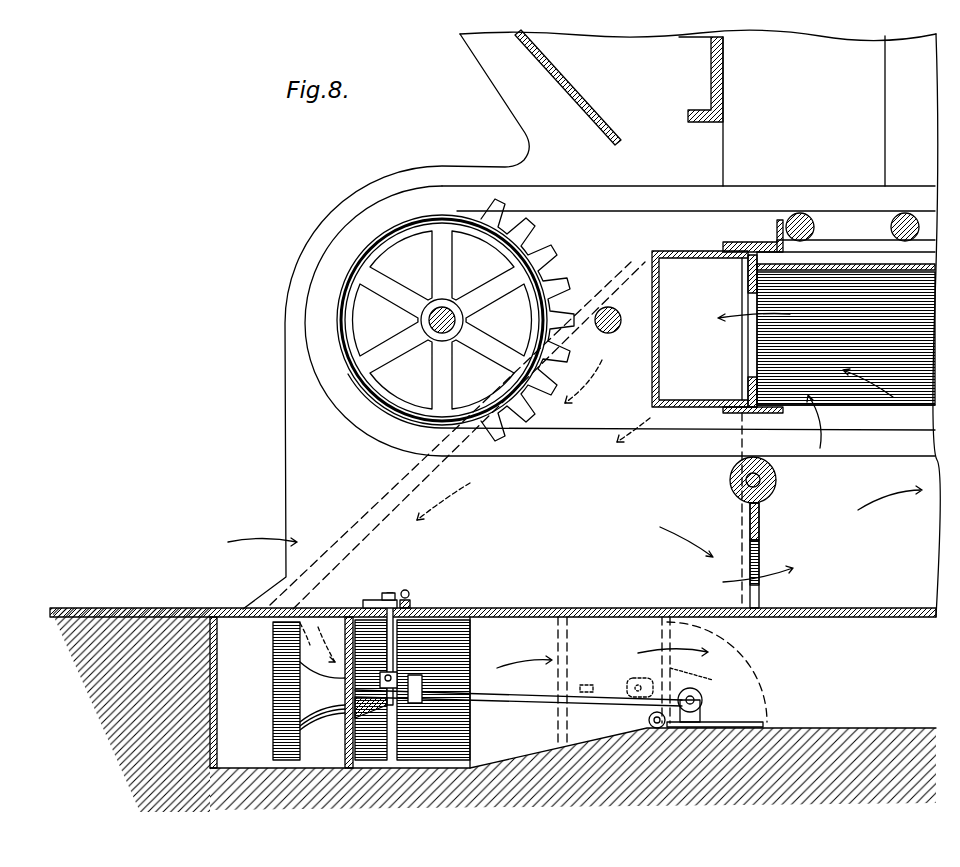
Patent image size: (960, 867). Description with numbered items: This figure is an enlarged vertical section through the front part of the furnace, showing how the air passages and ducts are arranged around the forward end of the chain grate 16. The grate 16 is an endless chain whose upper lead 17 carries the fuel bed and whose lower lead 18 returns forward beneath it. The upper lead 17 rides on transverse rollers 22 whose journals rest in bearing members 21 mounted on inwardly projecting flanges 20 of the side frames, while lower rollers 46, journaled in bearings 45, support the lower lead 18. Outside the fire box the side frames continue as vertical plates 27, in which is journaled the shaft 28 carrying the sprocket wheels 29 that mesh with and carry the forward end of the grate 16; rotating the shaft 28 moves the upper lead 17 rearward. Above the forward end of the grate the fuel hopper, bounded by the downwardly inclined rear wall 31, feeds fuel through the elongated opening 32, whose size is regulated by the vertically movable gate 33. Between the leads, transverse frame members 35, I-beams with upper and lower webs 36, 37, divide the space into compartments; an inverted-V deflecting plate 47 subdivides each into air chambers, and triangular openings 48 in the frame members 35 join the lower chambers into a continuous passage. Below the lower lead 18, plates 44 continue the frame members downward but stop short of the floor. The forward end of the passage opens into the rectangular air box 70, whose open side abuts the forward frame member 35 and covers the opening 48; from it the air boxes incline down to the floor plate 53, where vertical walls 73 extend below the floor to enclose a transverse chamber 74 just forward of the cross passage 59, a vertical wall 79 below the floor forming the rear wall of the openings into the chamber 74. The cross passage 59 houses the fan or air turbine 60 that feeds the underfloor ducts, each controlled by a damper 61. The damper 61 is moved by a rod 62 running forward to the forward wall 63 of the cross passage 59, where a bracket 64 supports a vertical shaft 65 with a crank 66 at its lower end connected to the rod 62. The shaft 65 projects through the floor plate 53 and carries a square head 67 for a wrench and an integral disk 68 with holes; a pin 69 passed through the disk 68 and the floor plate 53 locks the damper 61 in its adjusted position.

The grate 16 is at (589, 183).
The upper lead 17 is at (672, 196).
The lower lead 18 is at (582, 448).
The inwardly projecting flanges 20 is at (855, 244).
The bearing members 21 is at (890, 219).
The rollers 22 is at (370, 505).
The vertical plates or walls 27 is at (287, 440).
The shaft 28 is at (445, 308).
The sprocket wheels 29 is at (527, 243).
The downwardly inclined rear wall 31 is at (588, 103).
The elongated opening 32 is at (717, 148).
The vertically movable gate 33 is at (713, 83).
The transverse frame members 35 is at (750, 283).
The transverse web 36 is at (733, 240).
The transverse web 37 is at (732, 414).
The plates 44 is at (760, 528).
The bearings 45 is at (730, 479).
The lower rollers 46 is at (777, 483).
The deflecting plate 47 is at (823, 266).
The triangular shaped openings 48 is at (753, 378).
The floor plate 53 is at (548, 608).
The cross passage 59 is at (504, 692).
The fan or air turbine 60 is at (309, 691).
The damper 61 is at (723, 727).
The rod 62 is at (540, 697).
The forward wall 63 is at (345, 738).
The bracket 64 is at (366, 692).
The vertical shaft 65 is at (398, 668).
The crank 66 is at (423, 688).
The square head 67 is at (388, 594).
The disk 68 is at (370, 601).
The pin 69 is at (411, 592).
The transverse air duct or box 70 is at (657, 334).
The vertical walls 73 is at (220, 674).
The transverse chamber 74 is at (236, 615).
The vertical wall 79 is at (560, 651).